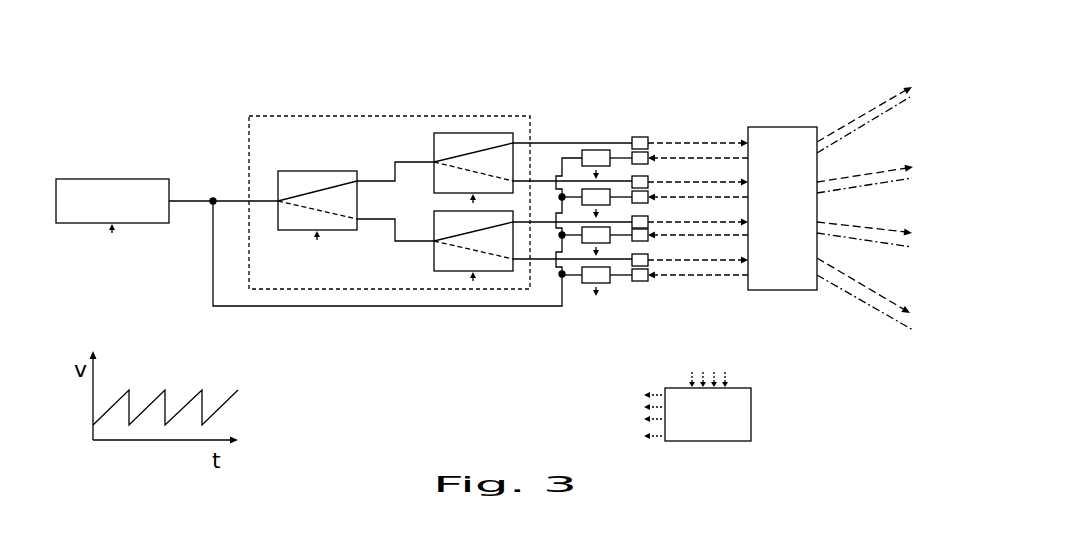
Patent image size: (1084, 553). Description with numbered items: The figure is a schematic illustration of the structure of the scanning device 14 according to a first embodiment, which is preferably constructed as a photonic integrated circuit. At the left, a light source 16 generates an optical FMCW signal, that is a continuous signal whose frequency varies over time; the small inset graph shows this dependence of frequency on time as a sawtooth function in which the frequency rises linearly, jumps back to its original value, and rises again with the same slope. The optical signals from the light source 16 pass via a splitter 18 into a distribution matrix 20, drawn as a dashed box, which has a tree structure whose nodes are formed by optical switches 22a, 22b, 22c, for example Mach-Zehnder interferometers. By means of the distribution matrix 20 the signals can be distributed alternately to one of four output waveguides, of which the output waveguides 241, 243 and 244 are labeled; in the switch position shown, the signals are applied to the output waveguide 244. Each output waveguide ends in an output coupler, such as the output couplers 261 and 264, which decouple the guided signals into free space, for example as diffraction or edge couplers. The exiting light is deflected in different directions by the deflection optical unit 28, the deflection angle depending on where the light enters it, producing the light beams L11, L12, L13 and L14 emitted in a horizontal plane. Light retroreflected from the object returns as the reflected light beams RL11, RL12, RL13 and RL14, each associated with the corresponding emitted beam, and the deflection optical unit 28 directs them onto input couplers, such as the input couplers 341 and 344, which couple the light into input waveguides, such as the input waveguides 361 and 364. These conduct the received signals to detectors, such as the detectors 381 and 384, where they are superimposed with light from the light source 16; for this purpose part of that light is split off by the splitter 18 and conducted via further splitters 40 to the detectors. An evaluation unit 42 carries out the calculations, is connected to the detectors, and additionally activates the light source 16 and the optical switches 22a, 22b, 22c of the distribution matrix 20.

The scanning device 14 is at (187, 87).
The light source 16 is at (118, 180).
The splitter 18 is at (214, 198).
The distribution matrix 20 is at (297, 116).
The optical switch 22a is at (310, 171).
The optical switch 22b is at (434, 147).
The optical switch 22c is at (434, 258).
The output waveguide 241 is at (528, 261).
The output waveguide 243 is at (545, 180).
The output waveguide 244 is at (572, 142).
The deflection optical unit 28 is at (781, 290).
The further splitters 40 is at (558, 276).
The evaluation unit 42 is at (746, 428).
The output coupler 261 is at (650, 262).
The output coupler 264 is at (645, 137).
The input coupler 341 is at (640, 283).
The input coupler 344 is at (645, 156).
The input waveguide 361 is at (623, 278).
The input waveguide 364 is at (629, 167).
The detector 381 is at (589, 283).
The detector 384 is at (600, 151).
The light beam L11 is at (897, 306).
The light beam L12 is at (902, 226).
The light beam L13 is at (895, 163).
The light beam L14 is at (875, 108).
The reflected light beam RL11 is at (852, 294).
The reflected light beam RL12 is at (850, 238).
The reflected light beam RL13 is at (880, 183).
The reflected light beam RL14 is at (878, 116).